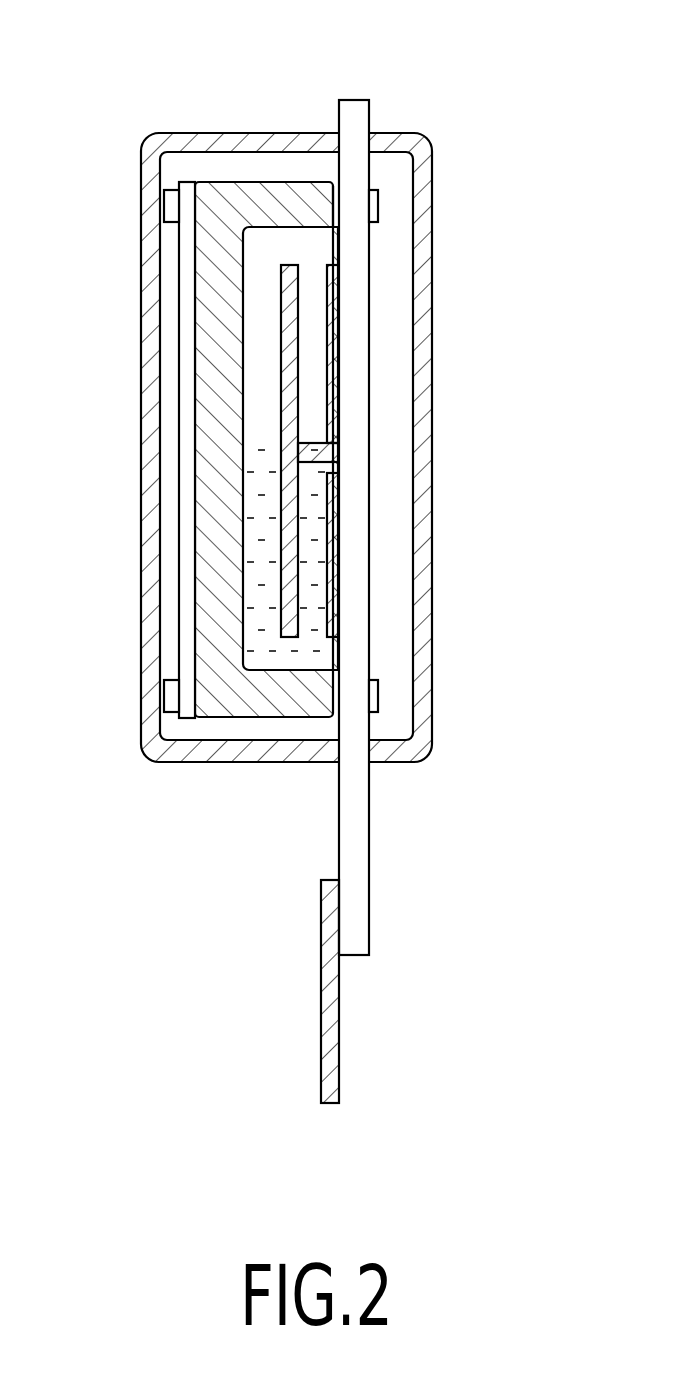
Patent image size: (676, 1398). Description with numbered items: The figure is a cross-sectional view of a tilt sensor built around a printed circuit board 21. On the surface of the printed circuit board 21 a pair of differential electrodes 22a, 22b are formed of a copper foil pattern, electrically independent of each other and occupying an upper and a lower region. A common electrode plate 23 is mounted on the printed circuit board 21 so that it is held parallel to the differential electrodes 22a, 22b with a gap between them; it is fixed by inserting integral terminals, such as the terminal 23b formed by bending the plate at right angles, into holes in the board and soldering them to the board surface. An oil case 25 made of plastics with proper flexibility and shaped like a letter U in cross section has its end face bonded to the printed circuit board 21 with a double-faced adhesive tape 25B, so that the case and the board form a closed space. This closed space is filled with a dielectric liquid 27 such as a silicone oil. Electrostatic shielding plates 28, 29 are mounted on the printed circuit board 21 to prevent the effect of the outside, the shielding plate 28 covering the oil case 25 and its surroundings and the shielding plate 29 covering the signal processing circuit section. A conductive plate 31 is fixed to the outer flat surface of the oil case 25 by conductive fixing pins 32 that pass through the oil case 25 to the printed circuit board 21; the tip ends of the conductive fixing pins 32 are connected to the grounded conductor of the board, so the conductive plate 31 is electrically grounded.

The printed circuit board 21 is at (351, 100).
The differential electrode 22a is at (337, 317).
The differential electrode 22b is at (335, 613).
The common electrode plate 23 is at (287, 343).
The terminal 23b is at (320, 445).
The oil case 25 is at (213, 277).
The double-faced adhesive tape 25B is at (330, 208).
The dielectric liquid 27 is at (327, 660).
The electrostatic shielding plate 28 is at (150, 558).
The electrostatic shielding plate 29 is at (423, 492).
The conductive plate 31 is at (187, 452).
The conductive fixing pins 32 is at (165, 207).